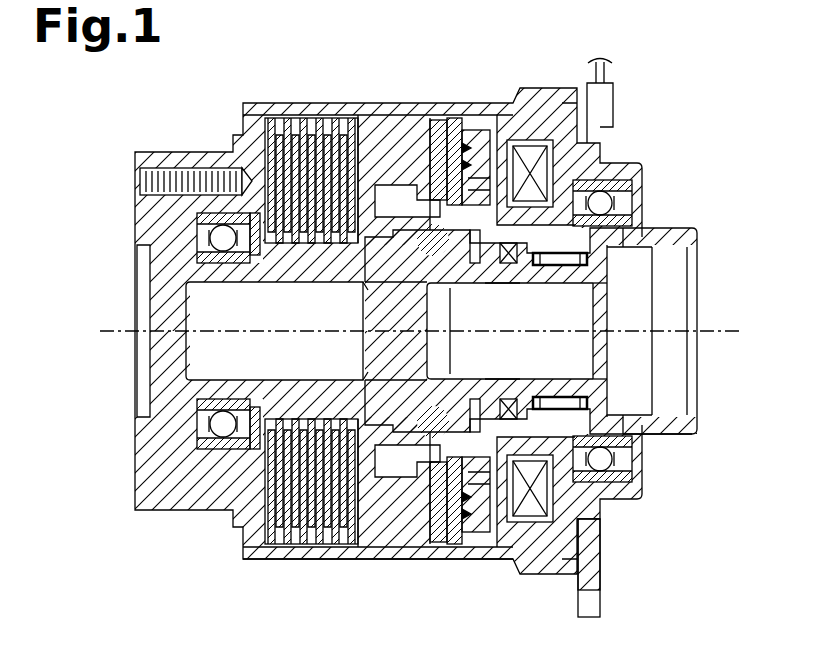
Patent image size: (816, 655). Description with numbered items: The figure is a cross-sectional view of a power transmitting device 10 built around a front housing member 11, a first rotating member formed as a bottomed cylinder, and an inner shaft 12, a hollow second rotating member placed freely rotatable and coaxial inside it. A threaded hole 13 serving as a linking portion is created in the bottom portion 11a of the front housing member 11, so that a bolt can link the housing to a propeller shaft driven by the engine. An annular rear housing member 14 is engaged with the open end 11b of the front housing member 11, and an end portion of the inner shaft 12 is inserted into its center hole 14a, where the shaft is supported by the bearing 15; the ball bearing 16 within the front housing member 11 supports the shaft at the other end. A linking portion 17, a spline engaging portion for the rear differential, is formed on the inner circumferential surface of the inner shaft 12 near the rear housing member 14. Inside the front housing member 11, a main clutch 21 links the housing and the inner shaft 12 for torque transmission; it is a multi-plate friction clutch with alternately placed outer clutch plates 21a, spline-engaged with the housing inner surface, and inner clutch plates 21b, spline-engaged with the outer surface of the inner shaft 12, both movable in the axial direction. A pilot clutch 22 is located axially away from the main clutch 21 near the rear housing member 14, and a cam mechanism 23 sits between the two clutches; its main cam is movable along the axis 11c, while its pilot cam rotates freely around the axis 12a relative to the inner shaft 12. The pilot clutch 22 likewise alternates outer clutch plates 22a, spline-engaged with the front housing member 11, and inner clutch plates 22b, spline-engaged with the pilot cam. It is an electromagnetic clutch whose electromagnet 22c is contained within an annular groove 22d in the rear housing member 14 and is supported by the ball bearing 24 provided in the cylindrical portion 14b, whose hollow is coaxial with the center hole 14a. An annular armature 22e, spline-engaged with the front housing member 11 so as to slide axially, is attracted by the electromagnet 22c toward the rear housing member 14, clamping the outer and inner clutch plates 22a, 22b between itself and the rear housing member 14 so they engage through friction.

The power transmitting device 10 is at (404, 562).
The front housing member 11 is at (176, 150).
The bottom portion 11a is at (135, 218).
The open end 11b is at (548, 570).
The axis 11c is at (228, 334).
The inner shaft 12 is at (617, 260).
The axis 12a is at (463, 333).
The threaded hole 13 is at (140, 181).
The rear housing member 14 is at (693, 228).
The center hole 14a is at (527, 392).
The cylindrical portion 14b is at (672, 414).
The bearing 15 is at (564, 266).
The ball bearing 16 is at (234, 262).
The linking portion 17 is at (500, 284).
The main clutch 21 is at (302, 54).
The outer clutch plates 21a is at (282, 118).
The inner clutch plates 21b is at (296, 118).
The pilot clutch 22 is at (567, 42).
The outer clutch plates 22a is at (457, 118).
The inner clutch plates 22b is at (487, 117).
The electromagnet 22c is at (530, 163).
The annular groove 22d is at (561, 84).
The armature 22e is at (437, 122).
The cam mechanism 23 is at (366, 98).
The ball bearing 24 is at (620, 165).